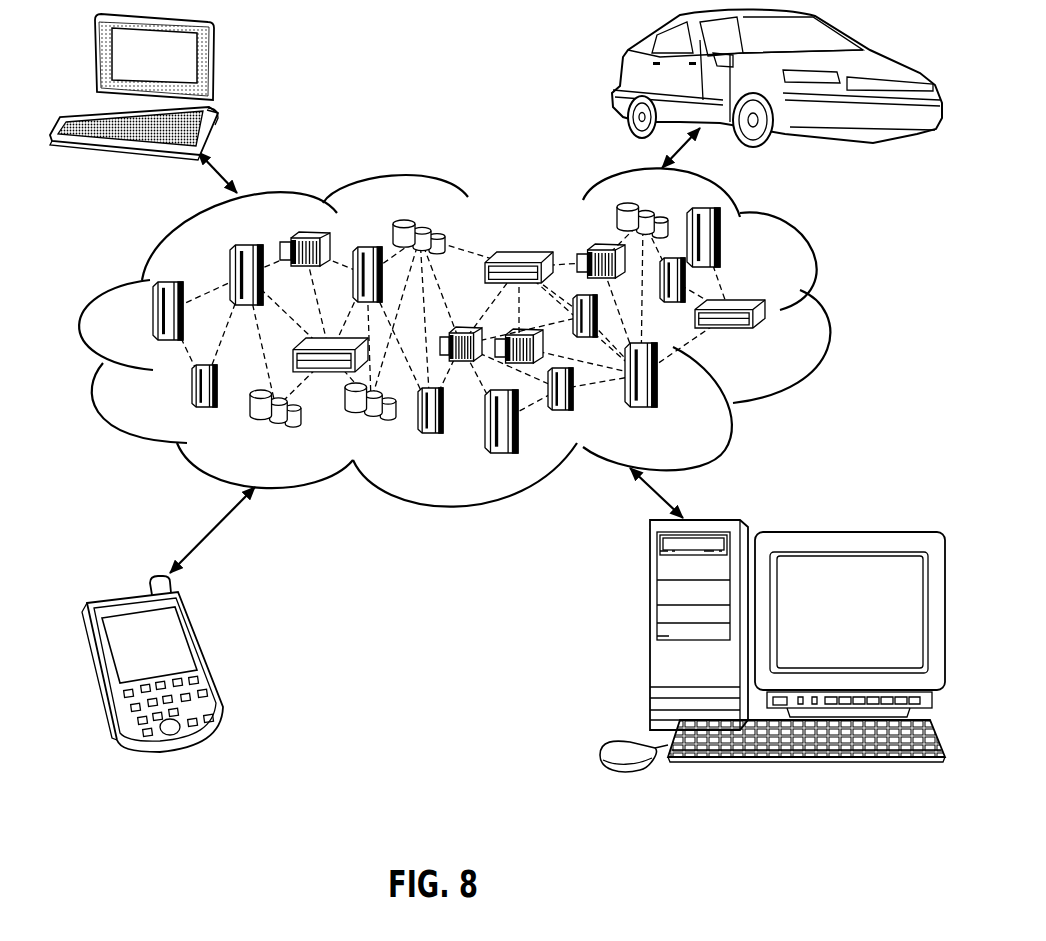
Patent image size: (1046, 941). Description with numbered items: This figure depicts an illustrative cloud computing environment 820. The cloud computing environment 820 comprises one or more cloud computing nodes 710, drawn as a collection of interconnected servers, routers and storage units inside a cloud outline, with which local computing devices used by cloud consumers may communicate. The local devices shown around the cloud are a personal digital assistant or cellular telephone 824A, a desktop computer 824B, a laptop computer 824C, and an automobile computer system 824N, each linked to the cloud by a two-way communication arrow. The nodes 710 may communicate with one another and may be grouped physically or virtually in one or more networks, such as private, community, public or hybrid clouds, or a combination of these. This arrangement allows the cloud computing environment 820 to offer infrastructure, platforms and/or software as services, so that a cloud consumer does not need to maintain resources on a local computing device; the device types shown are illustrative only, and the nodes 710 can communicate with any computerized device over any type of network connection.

The cloud computing nodes 710 is at (812, 270).
The cloud computing environment 820 is at (790, 336).
The personal digital assistant or cellular telephone 824A is at (203, 655).
The desktop computer 824B is at (647, 633).
The laptop computer 824C is at (217, 63).
The automobile computer system 824N is at (620, 72).